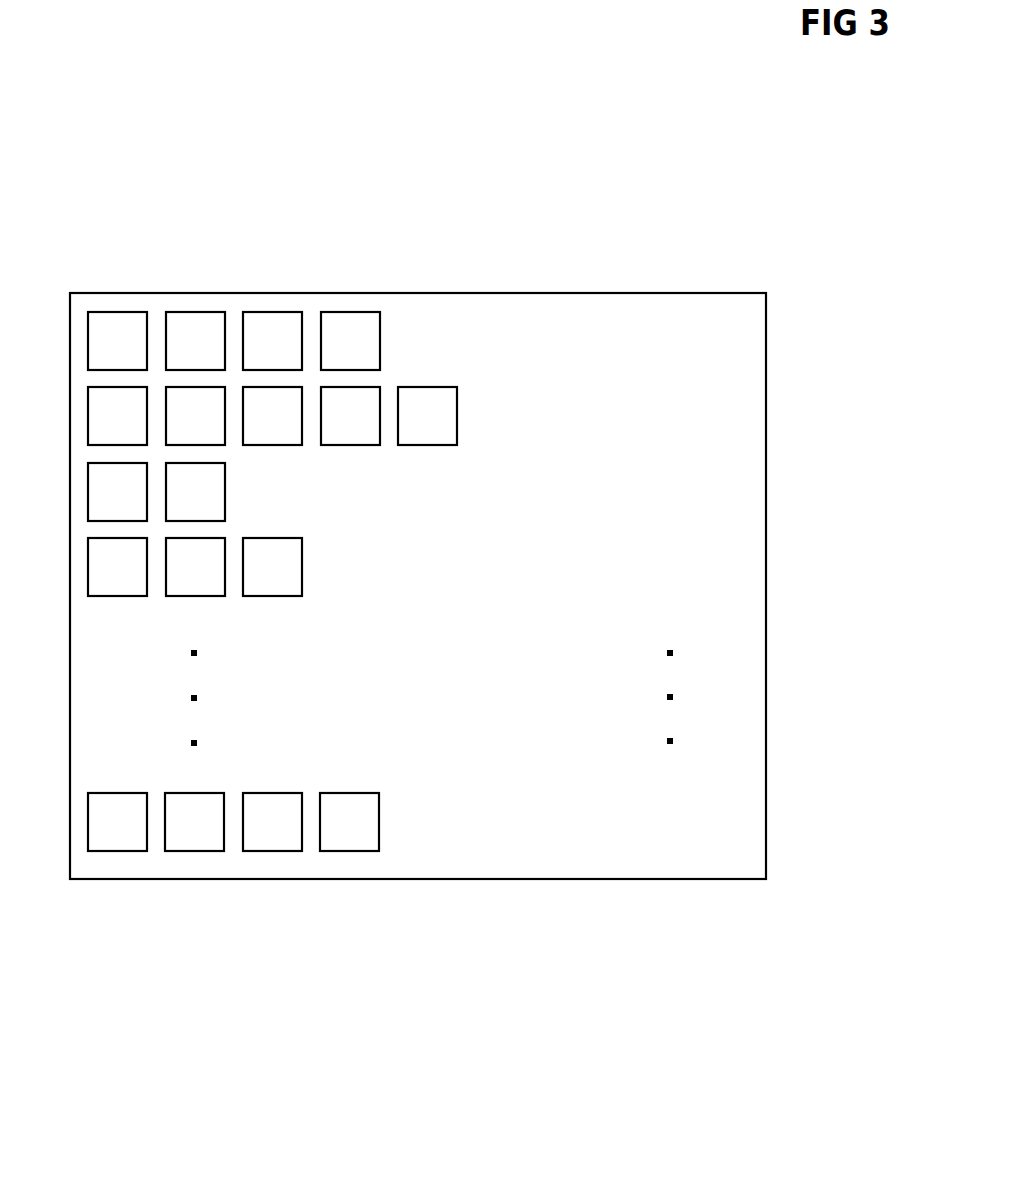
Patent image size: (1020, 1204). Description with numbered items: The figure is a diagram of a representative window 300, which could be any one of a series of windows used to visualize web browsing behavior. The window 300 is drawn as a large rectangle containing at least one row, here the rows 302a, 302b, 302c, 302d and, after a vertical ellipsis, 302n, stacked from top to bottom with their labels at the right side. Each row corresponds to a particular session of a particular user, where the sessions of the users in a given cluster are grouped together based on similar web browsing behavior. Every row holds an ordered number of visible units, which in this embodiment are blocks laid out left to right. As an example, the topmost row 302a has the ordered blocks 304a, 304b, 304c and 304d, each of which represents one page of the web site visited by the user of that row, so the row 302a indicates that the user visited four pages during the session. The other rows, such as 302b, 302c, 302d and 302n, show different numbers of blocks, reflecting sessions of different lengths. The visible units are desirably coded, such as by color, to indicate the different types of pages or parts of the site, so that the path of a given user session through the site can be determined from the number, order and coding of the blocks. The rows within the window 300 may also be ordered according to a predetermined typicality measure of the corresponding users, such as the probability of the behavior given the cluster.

The window 300 is at (400, 603).
The row 302a is at (374, 273).
The row 302b is at (401, 416).
The row 302c is at (400, 492).
The row 302d is at (401, 567).
The row 302n is at (400, 822).
The ordered block 304a is at (117, 332).
The ordered block 304b is at (193, 330).
The ordered block 304c is at (273, 330).
The ordered block 304d is at (352, 324).